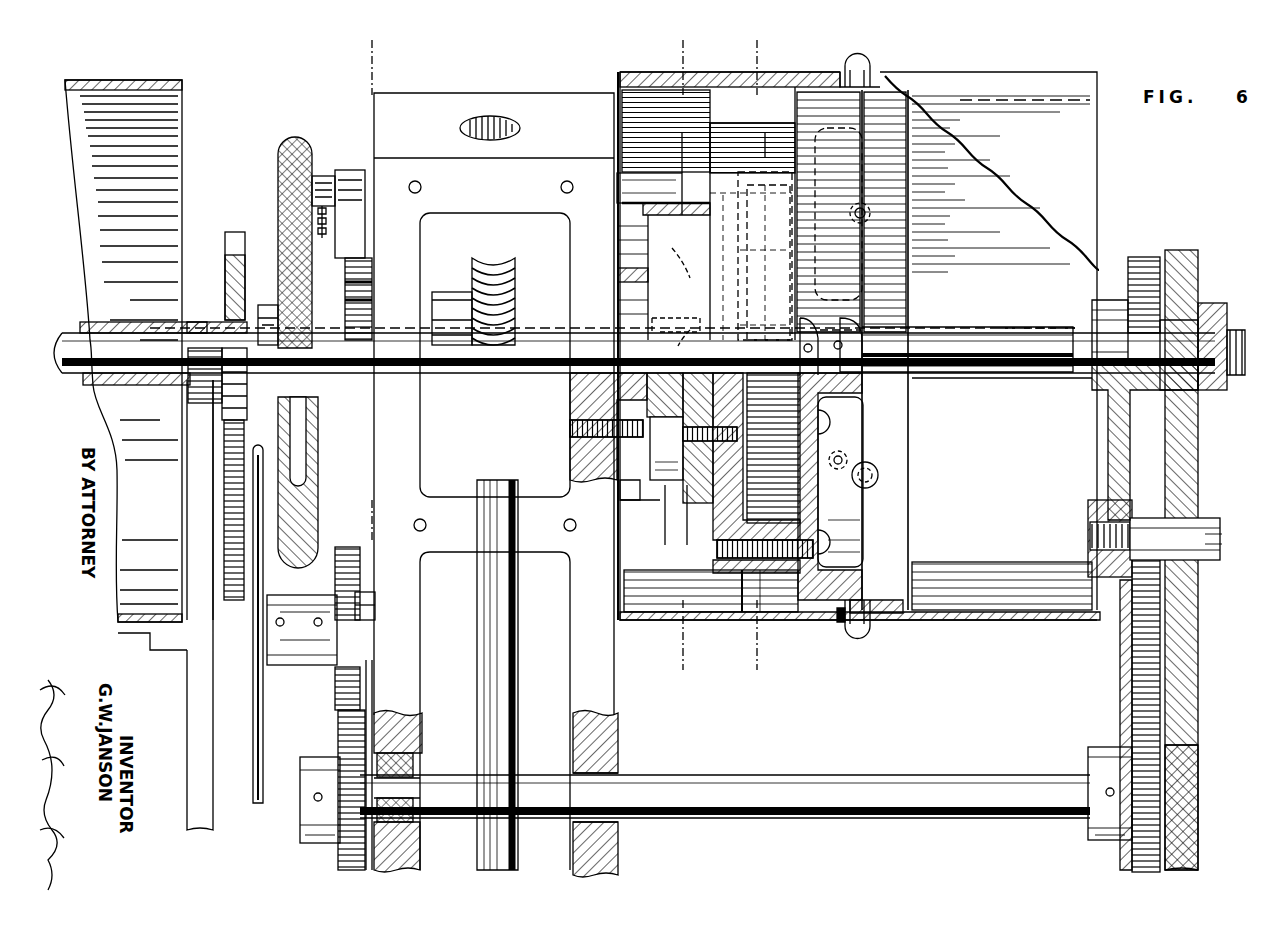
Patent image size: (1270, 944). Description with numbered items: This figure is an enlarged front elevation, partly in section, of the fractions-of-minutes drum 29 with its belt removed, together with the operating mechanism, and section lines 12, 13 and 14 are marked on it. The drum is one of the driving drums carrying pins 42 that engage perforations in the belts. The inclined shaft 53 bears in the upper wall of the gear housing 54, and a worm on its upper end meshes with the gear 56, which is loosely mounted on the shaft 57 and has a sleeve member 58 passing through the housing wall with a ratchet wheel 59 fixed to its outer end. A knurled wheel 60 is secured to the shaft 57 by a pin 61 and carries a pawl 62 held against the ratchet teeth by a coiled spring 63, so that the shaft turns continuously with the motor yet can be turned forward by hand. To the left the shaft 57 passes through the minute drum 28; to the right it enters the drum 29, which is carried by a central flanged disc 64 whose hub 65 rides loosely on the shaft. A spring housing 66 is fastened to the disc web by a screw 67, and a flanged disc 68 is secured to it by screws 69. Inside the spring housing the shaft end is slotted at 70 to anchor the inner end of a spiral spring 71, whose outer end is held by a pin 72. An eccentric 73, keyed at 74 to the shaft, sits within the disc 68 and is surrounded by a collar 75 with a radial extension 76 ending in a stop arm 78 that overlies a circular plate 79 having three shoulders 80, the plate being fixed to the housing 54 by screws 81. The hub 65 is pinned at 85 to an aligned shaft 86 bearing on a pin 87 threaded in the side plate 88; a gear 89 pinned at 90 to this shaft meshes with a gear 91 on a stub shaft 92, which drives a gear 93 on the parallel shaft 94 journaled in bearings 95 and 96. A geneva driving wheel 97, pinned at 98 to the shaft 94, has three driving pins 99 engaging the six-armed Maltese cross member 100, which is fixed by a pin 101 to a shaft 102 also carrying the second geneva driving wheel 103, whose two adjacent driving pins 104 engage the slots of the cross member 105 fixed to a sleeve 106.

The section line 12 is at (740, 57).
The section line 13 is at (700, 57).
The section line 14 is at (390, 50).
The minute drum 28 is at (170, 80).
The fractions-of-minutes drum 29 is at (1085, 150).
The pins 42 is at (872, 626).
The inclined shaft 53 is at (485, 735).
The gear housing 54 is at (432, 106).
The gear 56 is at (494, 276).
The shaft 57 is at (70, 340).
The sleeve member 58 is at (440, 304).
The ratchet wheel 59 is at (365, 308).
The knurled wheel 60 is at (293, 142).
The pin 61 is at (266, 320).
The pawl 62 is at (350, 180).
The coiled spring 63 is at (312, 252).
The central flanged disc 64 is at (848, 514).
The hub 65 is at (862, 378).
The spring housing 66 is at (716, 546).
The screw 67 is at (748, 614).
The flanged disc 68 is at (663, 515).
The screws 69 is at (713, 500).
The slot 70 is at (808, 340).
The spiral spring 71 is at (782, 258).
The pin 72 is at (722, 205).
The eccentric 73 is at (665, 426).
The key 74 is at (678, 326).
The collar 75 is at (668, 452).
The radial extension 76 is at (689, 273).
The stop arm 78 is at (617, 190).
The circular plate 79 is at (617, 486).
The shoulders 80 is at (625, 270).
The screws 81 is at (570, 430).
The pin 85 is at (852, 332).
The shaft 86 is at (968, 332).
The pin 87 is at (1160, 336).
The side plate 88 is at (1190, 440).
The gear 89 is at (1132, 260).
The pin 90 is at (1092, 364).
The gear 91 is at (1162, 589).
The stub shaft 92 is at (1205, 526).
The gear 93 is at (1130, 746).
The shaft 94 is at (958, 782).
The bearing 95 is at (1200, 823).
The bearing 96 is at (423, 835).
The driving wheel 97 is at (346, 850).
The pin 98 is at (314, 800).
The driving pins 99 is at (336, 714).
The Maltese cross member 100 is at (350, 555).
The pin 101 is at (318, 628).
The shaft 102 is at (374, 614).
The driving wheel 103 is at (238, 558).
The driving pins 104 is at (222, 462).
The cross member 105 is at (228, 424).
The sleeve 106 is at (122, 330).